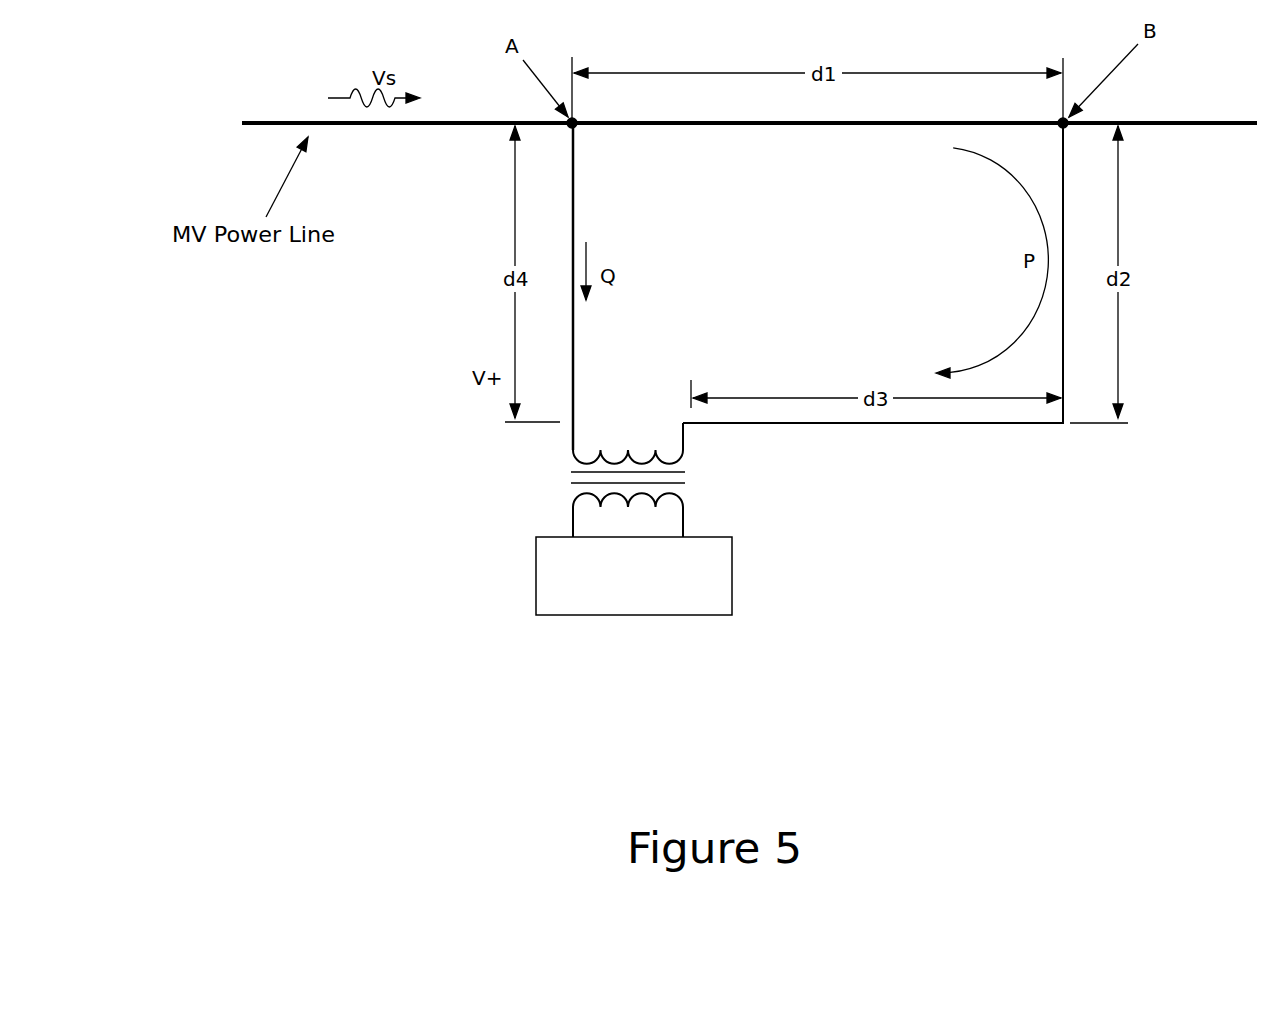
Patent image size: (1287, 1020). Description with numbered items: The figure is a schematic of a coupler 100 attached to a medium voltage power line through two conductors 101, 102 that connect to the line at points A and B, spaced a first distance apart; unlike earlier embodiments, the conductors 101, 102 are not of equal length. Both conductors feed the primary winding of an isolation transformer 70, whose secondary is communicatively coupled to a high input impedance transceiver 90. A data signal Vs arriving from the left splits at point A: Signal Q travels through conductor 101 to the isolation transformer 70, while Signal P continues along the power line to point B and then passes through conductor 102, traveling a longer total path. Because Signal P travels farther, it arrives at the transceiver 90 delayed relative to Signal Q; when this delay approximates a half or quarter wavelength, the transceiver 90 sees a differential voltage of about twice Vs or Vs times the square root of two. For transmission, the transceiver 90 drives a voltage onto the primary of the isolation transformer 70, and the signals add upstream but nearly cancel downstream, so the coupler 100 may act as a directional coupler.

The isolation transformer 70 is at (552, 482).
The transceiver 90 is at (634, 576).
The coupler 100 is at (886, 324).
The conductor 101 is at (580, 362).
The conductor 102 is at (1040, 427).